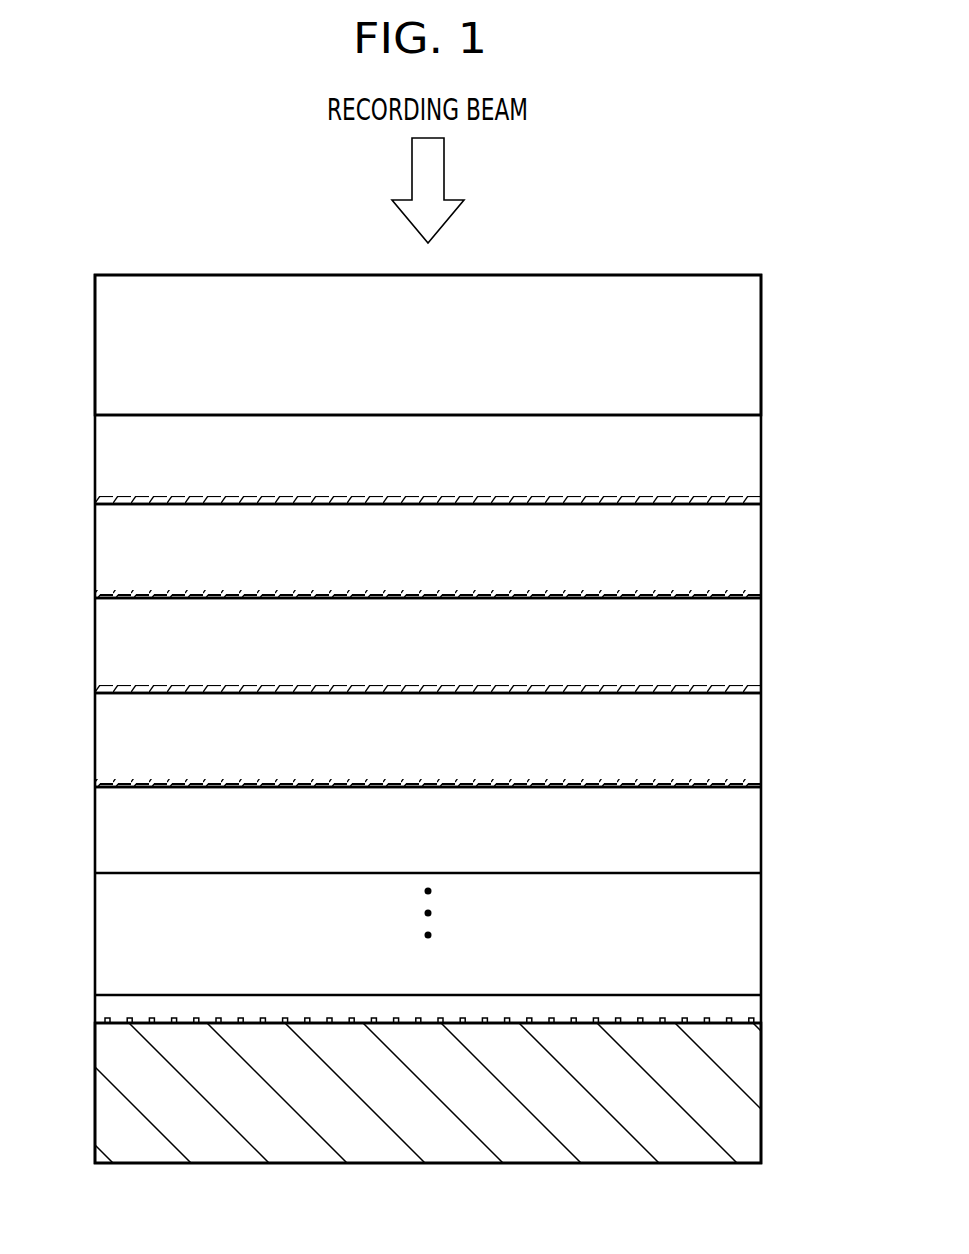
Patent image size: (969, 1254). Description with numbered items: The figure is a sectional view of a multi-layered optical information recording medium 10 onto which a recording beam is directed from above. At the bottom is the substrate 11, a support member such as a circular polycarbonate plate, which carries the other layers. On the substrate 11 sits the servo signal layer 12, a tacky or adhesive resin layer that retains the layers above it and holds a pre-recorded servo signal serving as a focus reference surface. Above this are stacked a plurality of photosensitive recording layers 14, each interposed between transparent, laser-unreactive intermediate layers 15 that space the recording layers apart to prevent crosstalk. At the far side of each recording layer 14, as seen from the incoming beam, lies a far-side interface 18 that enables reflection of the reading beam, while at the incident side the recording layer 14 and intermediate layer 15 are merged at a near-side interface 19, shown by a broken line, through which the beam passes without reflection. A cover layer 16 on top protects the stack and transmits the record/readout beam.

The optical information recording medium 10 is at (590, 231).
The substrate 11 is at (745, 1071).
The servo signal layer 12 is at (743, 1005).
The recording layer 14 is at (750, 500).
The intermediate layer 15 is at (745, 447).
The cover layer 16 is at (745, 345).
The far-side interface 18 is at (126, 505).
The near-side interface 19 is at (128, 591).